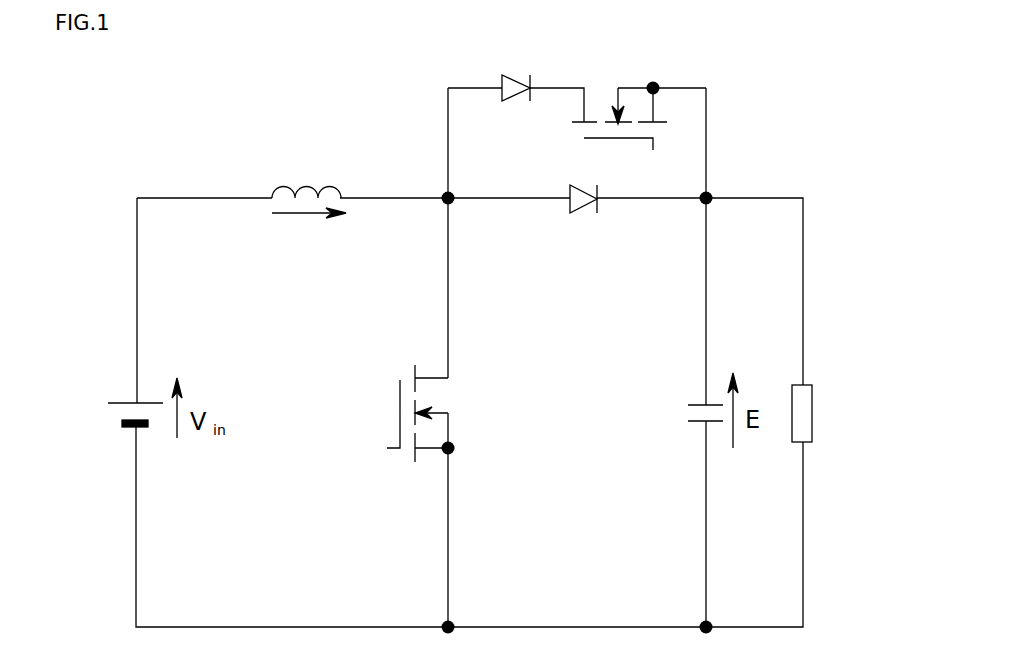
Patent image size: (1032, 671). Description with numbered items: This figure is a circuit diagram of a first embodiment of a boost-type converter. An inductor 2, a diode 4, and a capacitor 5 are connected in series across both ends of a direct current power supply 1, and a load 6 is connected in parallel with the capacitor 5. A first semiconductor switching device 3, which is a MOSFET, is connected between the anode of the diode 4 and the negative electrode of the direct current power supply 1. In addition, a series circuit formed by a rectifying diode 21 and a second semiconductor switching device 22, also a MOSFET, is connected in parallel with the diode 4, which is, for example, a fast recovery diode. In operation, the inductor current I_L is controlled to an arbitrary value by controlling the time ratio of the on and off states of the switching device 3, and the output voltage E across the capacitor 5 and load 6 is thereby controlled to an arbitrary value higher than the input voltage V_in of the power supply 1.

The direct current power supply 1 is at (122, 394).
The inductor 2 is at (296, 177).
The first semiconductor switching device 3 is at (388, 398).
The diode 4 is at (558, 190).
The capacitor 5 is at (693, 393).
The load 6 is at (805, 400).
The rectifying diode 21 is at (520, 68).
The second semiconductor switching device 22 is at (618, 82).